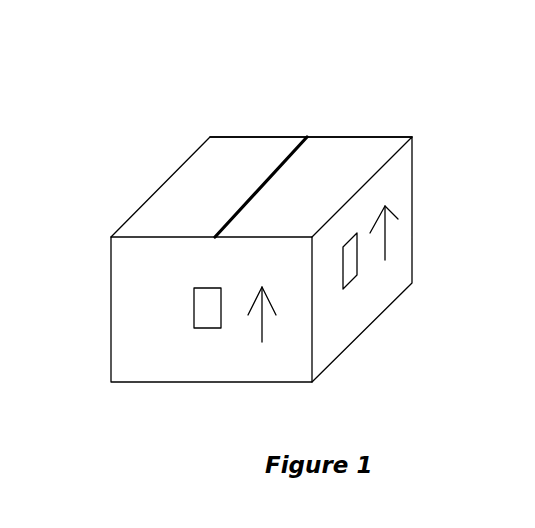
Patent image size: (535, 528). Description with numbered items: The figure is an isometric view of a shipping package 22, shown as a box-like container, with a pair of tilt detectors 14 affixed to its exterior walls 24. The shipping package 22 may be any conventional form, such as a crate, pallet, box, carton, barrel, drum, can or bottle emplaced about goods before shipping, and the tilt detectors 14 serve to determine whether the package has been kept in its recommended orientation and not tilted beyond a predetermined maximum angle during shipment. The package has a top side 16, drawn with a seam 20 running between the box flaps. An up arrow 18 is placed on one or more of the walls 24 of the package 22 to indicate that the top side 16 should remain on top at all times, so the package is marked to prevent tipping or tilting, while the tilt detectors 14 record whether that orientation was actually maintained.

The tilt detector 14 is at (203, 301).
The top side 16 is at (221, 181).
The up arrow 18 is at (265, 329).
The seam 20 is at (304, 140).
The shipping package 22 is at (247, 137).
The wall 24 is at (155, 315).